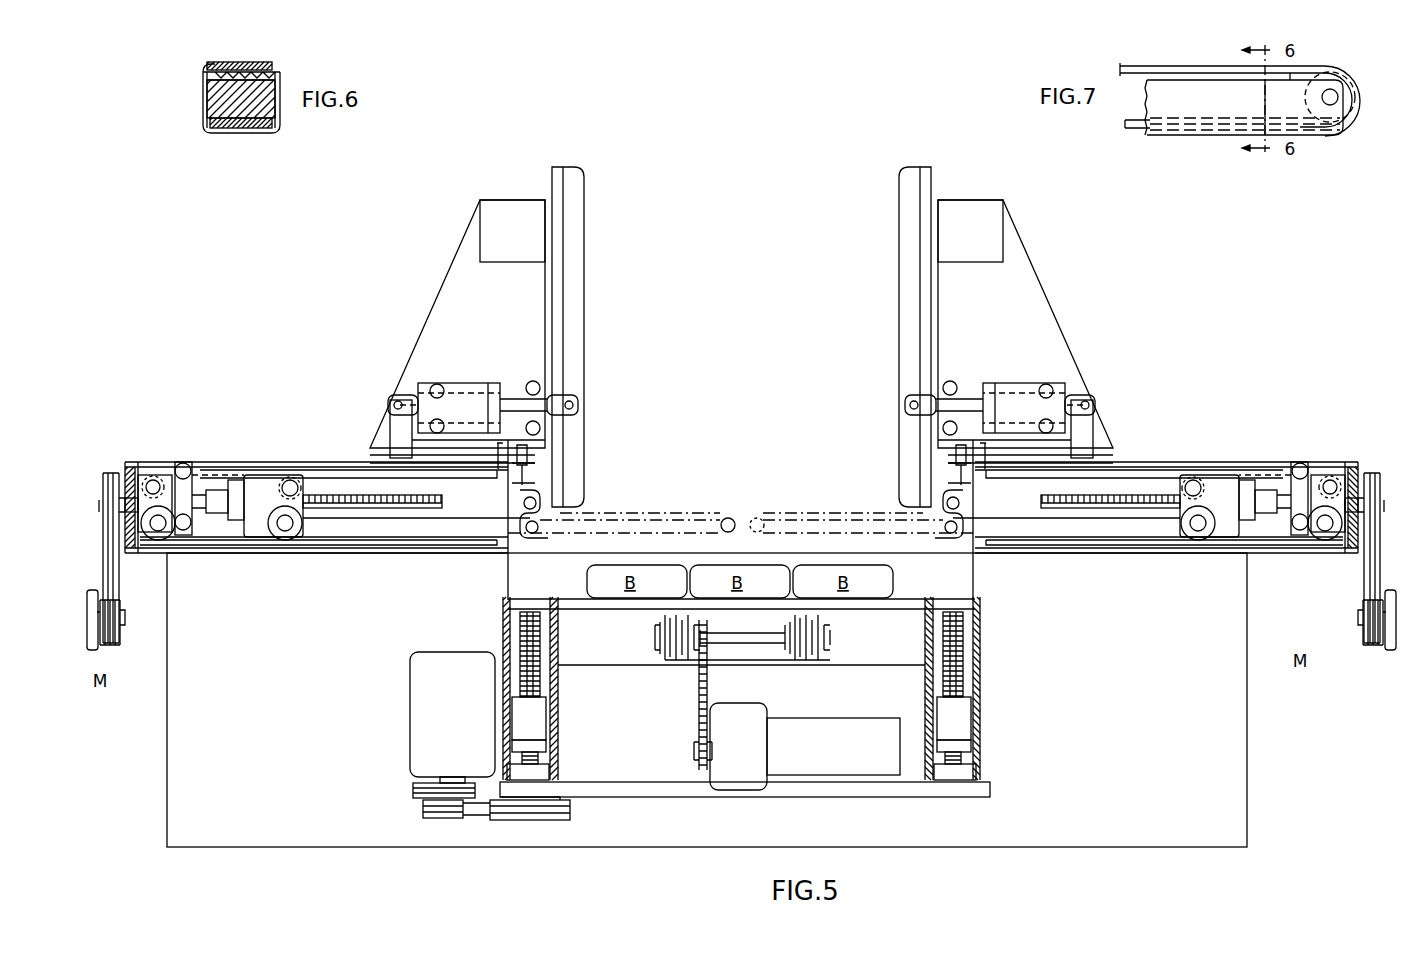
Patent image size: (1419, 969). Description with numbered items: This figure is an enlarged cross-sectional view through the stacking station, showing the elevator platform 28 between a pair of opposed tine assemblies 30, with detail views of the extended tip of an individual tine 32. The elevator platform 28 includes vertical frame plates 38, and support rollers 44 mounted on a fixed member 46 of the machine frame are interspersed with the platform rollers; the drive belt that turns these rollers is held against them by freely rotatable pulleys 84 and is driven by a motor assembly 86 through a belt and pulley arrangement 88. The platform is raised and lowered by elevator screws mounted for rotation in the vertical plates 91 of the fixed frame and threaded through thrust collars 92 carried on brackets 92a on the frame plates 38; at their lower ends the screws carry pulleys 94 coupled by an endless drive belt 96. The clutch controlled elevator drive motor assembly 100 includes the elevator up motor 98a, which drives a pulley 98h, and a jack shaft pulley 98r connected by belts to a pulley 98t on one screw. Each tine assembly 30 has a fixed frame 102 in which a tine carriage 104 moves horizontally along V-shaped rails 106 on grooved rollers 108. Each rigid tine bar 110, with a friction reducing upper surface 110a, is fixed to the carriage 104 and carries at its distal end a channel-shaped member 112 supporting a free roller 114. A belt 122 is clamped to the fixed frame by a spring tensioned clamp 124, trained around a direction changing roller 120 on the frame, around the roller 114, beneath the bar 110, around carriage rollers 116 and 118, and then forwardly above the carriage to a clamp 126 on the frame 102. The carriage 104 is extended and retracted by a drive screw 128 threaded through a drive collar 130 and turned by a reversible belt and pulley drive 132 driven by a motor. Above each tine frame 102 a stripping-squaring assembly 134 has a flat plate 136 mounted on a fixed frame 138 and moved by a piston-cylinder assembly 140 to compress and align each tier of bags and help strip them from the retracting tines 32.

In FIG. 5, the elevator platform 28 is at (575, 590).
In FIG. 5, the tine assembly 30 is at (300, 460).
In FIG. 5, the tine 32 is at (548, 532).
In FIG. 5, the frame plate 38 is at (560, 690).
In FIG. 5, the support roller 44 is at (925, 598).
In FIG. 5, the fixed member 46 is at (520, 600).
In FIG. 5, the pulley 84 is at (655, 630).
In FIG. 5, the motor assembly 86 is at (745, 705).
In FIG. 5, the belt and pulley arrangement 88 is at (703, 716).
In FIG. 5, the vertical plate 91 is at (510, 690).
In FIG. 5, the threaded thrust collar 92 is at (530, 718).
In FIG. 5, the bracket 92a is at (540, 746).
In FIG. 5, the pulley 94 is at (548, 772).
In FIG. 5, the endless drive belt 96 is at (812, 792).
In FIG. 5, the elevator up motor 98a is at (420, 705).
In FIG. 5, the pulley 98h is at (412, 790).
In FIG. 5, the pulley 98r is at (448, 815).
In FIG. 5, the pulley 98t is at (548, 818).
In FIG. 5, the elevator drive motor assembly 100 is at (440, 822).
In FIG. 5, the fixed frame 102 is at (166, 460).
In FIG. 5, the tine carriage 104 is at (264, 480).
In FIG. 5, the V-shaped rail 106 is at (395, 555).
In FIG. 5, the grooved roller 108 is at (158, 540).
In FIG. 6, the rigid bar 110 is at (215, 100).
In FIG. 7, the rigid bar 110 is at (1148, 100).
In FIG. 5, the rigid bar 110 is at (440, 530).
In FIG. 6, the upper surface 110a is at (275, 72).
In FIG. 7, the upper surface 110a is at (1138, 73).
In FIG. 6, the channel-shaped member 112 is at (278, 122).
In FIG. 7, the channel-shaped member 112 is at (1205, 110).
In FIG. 7, the roller 114 is at (1345, 105).
In FIG. 5, the roller 114 is at (525, 527).
In FIG. 5, the roller 116 is at (185, 532).
In FIG. 5, the roller 118 is at (185, 462).
In FIG. 5, the direction changing roller 120 is at (540, 500).
In FIG. 6, the belt 122 is at (230, 65).
In FIG. 7, the belt 122 is at (1138, 126).
In FIG. 5, the belt 122 is at (440, 470).
In FIG. 5, the spring tensioned clamp 124 is at (535, 470).
In FIG. 5, the clamp 126 is at (497, 450).
In FIG. 5, the drive screw 128 is at (355, 495).
In FIG. 5, the drive collar 130 is at (218, 492).
In FIG. 5, the belt and pulley drive 132 is at (108, 478).
In FIG. 5, the stripping-squaring assembly 134 is at (415, 322).
In FIG. 5, the flat plate 136 is at (586, 312).
In FIG. 5, the fixed frame 138 is at (733, 255).
In FIG. 5, the piston-cylinder assembly 140 is at (470, 385).